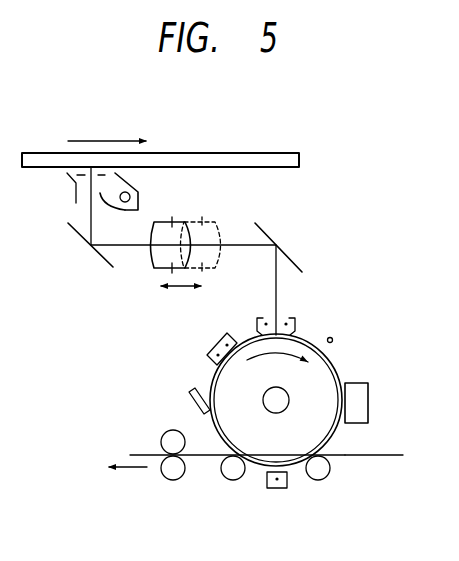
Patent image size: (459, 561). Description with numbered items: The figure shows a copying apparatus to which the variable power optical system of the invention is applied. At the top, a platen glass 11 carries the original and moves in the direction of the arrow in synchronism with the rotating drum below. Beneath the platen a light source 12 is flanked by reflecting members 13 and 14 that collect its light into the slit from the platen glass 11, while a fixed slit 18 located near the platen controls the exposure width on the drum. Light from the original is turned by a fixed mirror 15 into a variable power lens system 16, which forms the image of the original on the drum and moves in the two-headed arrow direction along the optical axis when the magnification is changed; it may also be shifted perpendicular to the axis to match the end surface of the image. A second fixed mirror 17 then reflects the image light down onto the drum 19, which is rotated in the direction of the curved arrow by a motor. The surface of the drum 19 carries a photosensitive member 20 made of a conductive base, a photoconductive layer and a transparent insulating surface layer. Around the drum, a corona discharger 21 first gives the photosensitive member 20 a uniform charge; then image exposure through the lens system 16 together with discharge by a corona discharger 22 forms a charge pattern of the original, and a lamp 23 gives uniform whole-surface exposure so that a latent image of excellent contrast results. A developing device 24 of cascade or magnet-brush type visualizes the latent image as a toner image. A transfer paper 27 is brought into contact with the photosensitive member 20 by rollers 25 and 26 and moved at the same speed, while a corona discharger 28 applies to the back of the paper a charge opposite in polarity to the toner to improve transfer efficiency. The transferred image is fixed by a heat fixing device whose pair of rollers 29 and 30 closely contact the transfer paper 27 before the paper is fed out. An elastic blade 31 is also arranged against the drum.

The platen glass 11 is at (215, 167).
The light source 12 is at (139, 193).
The reflecting member 13 is at (121, 210).
The reflecting member 14 is at (65, 185).
The fixed mirror 15 is at (100, 260).
The variable power lens system 16 is at (177, 223).
The fixed mirror 17 is at (293, 262).
The slit 18 is at (82, 173).
The drum 19 is at (210, 421).
The photosensitive member 20 is at (222, 442).
The corona discharger 21 is at (215, 345).
The corona discharger 22 is at (298, 322).
The lamp 23 is at (333, 340).
The developing device 24 is at (368, 400).
The roller 25 is at (315, 481).
The roller 26 is at (230, 481).
The transfer paper 27 is at (375, 458).
The corona discharger 28 is at (277, 488).
The roller 29 is at (175, 481).
The roller 30 is at (170, 429).
The elastic blade 31 is at (193, 390).